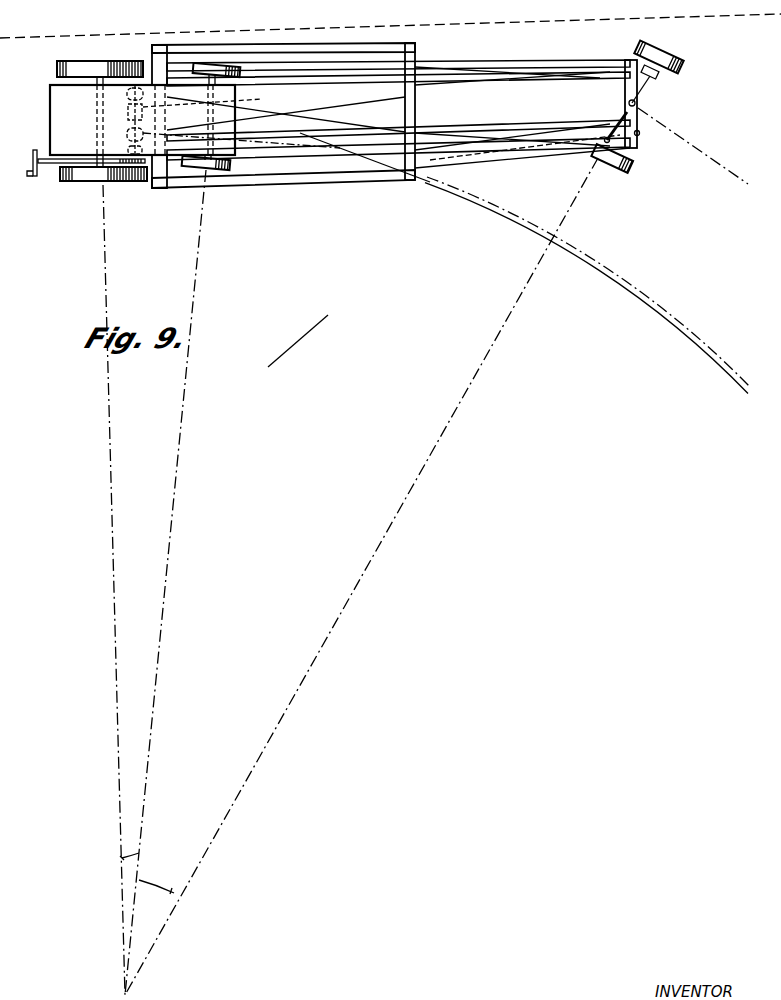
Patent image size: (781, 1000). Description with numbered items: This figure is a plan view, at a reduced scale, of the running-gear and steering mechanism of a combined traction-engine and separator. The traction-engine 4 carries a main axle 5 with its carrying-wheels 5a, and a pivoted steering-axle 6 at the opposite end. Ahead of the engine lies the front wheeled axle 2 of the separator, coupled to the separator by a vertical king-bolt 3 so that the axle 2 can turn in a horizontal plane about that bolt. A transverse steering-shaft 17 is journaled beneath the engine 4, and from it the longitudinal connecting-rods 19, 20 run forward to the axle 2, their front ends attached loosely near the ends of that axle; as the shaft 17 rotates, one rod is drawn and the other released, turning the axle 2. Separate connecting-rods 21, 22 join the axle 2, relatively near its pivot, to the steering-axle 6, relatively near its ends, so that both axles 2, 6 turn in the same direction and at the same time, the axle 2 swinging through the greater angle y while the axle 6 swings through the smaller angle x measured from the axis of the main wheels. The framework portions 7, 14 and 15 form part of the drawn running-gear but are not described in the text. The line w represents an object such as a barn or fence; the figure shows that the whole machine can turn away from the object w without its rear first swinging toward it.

The front wheeled axle 2 is at (638, 118).
The vertical king-bolt 3 is at (638, 104).
The traction-engine 4 is at (195, 120).
The main axle 5 is at (97, 102).
The carrying-wheels 5a is at (92, 178).
The steering-axle 6 is at (212, 94).
The main frame 7 is at (291, 128).
The frame member 14 is at (163, 67).
The side rails 15 is at (270, 111).
The transverse steering-shaft 17 is at (135, 113).
The longitudinal connecting-rod 19 is at (339, 134).
The longitudinal connecting-rod 20 is at (380, 88).
The connecting-rod 21 is at (512, 121).
The connecting-rod 22 is at (556, 87).
The line representing an object w is at (390, 19).
The angle of engine steering-axle x is at (142, 850).
The angle of separator axle y is at (156, 879).